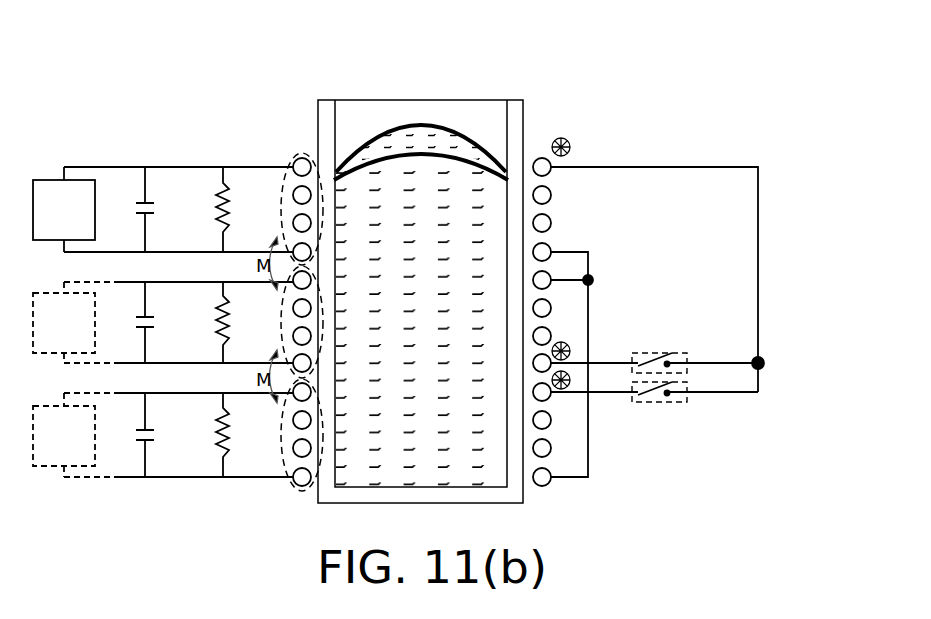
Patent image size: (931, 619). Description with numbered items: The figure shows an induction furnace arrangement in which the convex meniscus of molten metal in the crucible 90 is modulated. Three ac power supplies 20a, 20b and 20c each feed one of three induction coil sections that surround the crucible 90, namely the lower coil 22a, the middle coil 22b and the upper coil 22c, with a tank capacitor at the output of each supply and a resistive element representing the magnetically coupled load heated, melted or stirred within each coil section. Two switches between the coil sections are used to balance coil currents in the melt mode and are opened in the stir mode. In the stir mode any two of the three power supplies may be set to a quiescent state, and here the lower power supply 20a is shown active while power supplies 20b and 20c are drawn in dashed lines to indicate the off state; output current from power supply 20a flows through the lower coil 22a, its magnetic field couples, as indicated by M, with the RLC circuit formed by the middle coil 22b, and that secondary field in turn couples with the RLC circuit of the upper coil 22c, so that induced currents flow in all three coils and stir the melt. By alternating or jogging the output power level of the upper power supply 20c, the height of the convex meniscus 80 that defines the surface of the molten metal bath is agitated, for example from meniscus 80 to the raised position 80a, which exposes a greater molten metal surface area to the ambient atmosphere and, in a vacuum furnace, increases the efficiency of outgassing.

The power supply 20a is at (88, 449).
The power supply 20b is at (88, 336).
The upper power supply 20c is at (88, 223).
The lower coil 22a is at (787, 382).
The middle coil 22b is at (787, 267).
The upper coil 22c is at (787, 153).
The convex meniscus 80 is at (371, 152).
The meniscus 80a is at (416, 124).
The crucible 90 is at (515, 107).